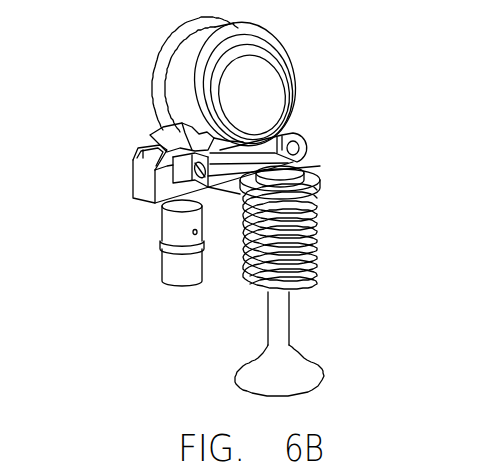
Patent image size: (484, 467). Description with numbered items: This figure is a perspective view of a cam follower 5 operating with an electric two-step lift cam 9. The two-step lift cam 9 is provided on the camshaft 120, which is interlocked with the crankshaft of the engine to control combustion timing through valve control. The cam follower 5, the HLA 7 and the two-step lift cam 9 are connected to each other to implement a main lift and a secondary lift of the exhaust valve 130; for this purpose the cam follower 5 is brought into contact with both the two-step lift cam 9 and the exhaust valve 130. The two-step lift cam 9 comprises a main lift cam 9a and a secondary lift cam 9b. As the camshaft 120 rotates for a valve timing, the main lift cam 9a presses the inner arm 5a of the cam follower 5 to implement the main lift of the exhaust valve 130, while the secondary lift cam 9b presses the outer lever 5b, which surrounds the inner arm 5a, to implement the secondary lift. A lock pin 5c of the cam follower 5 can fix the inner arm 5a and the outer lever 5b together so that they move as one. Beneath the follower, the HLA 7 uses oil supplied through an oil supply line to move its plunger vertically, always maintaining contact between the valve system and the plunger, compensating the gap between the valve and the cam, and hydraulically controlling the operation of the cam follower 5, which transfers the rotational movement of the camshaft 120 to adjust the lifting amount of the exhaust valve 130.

The two-step lift cam 9 is at (55, 32).
The main lift cam 9a is at (160, 77).
The secondary lift cam 9b is at (207, 62).
The camshaft 120 is at (296, 79).
The cam follower 5 is at (425, 140).
The inner arm 5a is at (305, 132).
The outer lever 5b is at (282, 186).
The lock pin 5c is at (285, 207).
The HLA 7 is at (157, 287).
The exhaust valve 130 is at (278, 343).